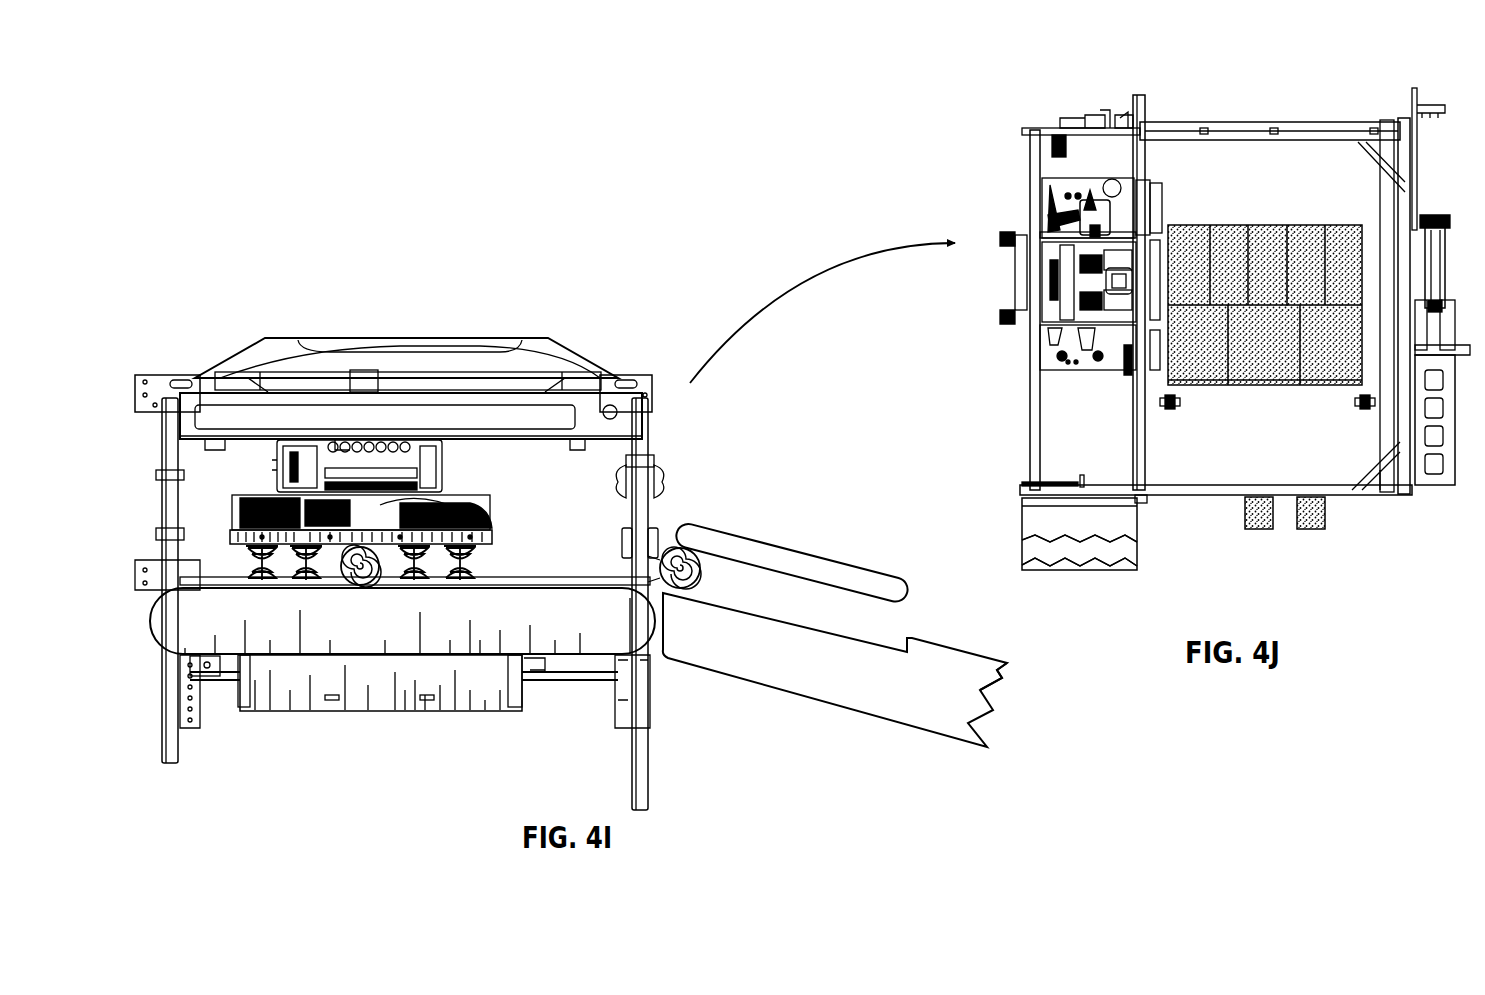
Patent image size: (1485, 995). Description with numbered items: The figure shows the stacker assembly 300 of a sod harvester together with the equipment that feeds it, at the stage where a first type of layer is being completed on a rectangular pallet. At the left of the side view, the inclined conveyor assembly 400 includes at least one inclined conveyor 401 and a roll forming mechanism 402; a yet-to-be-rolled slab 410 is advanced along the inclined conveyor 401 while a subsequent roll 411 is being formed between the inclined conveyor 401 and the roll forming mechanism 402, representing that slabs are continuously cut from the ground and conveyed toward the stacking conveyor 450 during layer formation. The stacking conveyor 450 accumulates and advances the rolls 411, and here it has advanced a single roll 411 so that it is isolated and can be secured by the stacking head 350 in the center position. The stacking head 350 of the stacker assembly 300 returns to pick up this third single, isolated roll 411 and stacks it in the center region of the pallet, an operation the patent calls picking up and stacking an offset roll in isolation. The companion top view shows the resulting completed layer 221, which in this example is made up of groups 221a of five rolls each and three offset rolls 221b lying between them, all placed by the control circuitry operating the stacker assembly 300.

In FIG. 4I, the stacker assembly 300 is at (210, 297).
In FIG. 4J, the stacker assembly 300 is at (995, 85).
In FIG. 4I, the stacking head 350 is at (234, 531).
In FIG. 4I, the roll 411 is at (350, 582).
In FIG. 4I, the stacking conveyor 450 is at (260, 647).
In FIG. 4J, the stacking conveyor 450 is at (1032, 445).
In FIG. 4I, the roll forming mechanism 402 is at (895, 586).
In FIG. 4J, the roll forming mechanism 402 is at (1118, 518).
In FIG. 4I, the inclined conveyor 401 is at (829, 685).
In FIG. 4J, the inclined conveyor 401 is at (1118, 548).
In FIG. 4I, the inclined conveyor assembly 400 is at (1022, 640).
In FIG. 4I, the slab 410 is at (1008, 675).
In FIG. 4J, the layer 221 is at (1155, 321).
In FIG. 4J, the group 221a is at (1298, 225).
In FIG. 4J, the offset roll 221b is at (1278, 290).